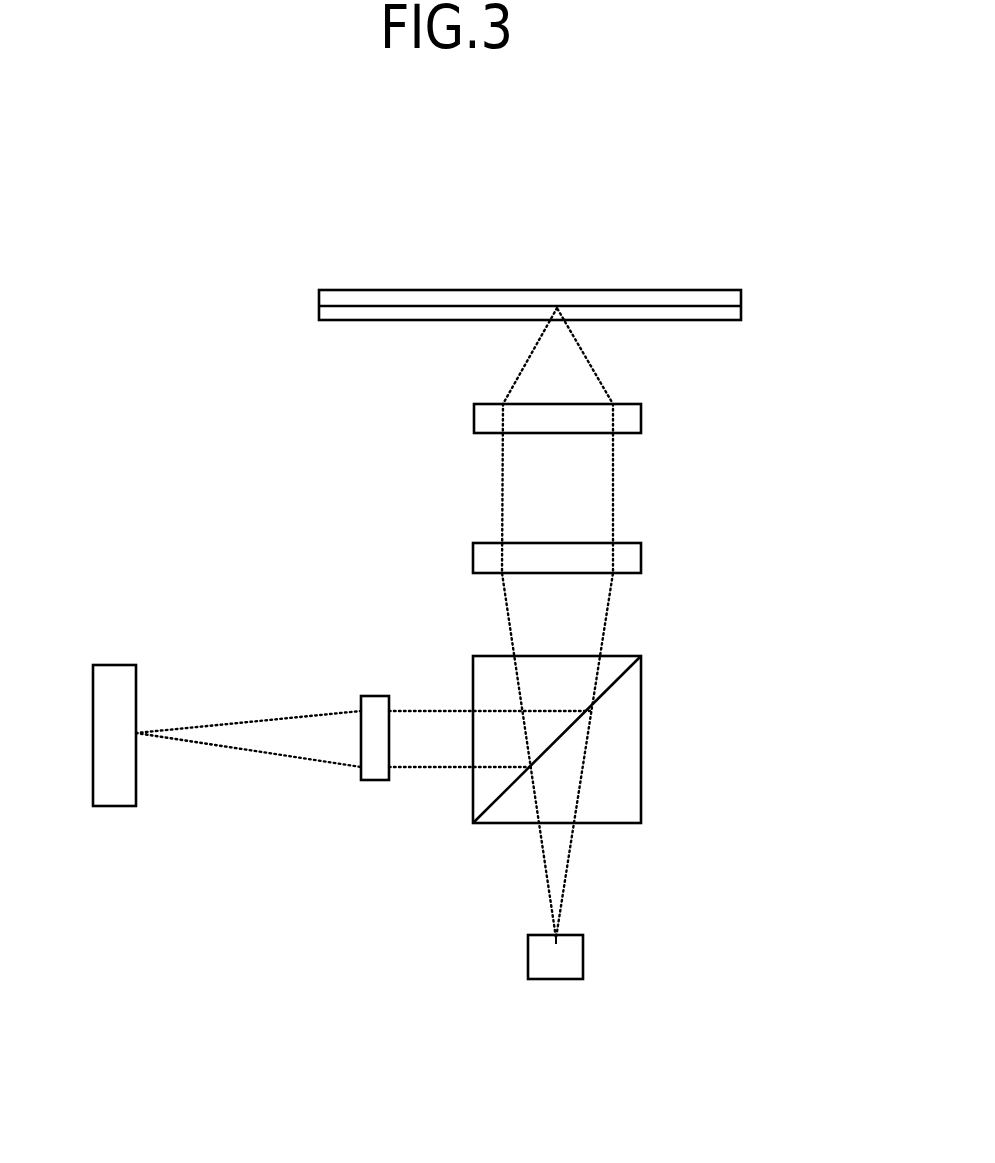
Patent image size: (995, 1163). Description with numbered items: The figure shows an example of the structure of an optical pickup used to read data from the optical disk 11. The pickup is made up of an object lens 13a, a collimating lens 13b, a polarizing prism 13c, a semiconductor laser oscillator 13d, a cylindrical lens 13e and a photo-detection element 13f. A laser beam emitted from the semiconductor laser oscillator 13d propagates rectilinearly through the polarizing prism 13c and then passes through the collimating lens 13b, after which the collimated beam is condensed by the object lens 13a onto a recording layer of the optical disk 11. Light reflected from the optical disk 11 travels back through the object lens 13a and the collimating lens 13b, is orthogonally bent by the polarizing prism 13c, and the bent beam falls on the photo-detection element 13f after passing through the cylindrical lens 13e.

The optical disk 11 is at (713, 293).
The object lens 13a is at (641, 418).
The collimating lens 13b is at (641, 557).
The polarizing prism 13c is at (641, 723).
The semiconductor laser oscillator 13d is at (583, 963).
The cylindrical lens 13e is at (370, 696).
The photo-detection element 13f is at (122, 665).